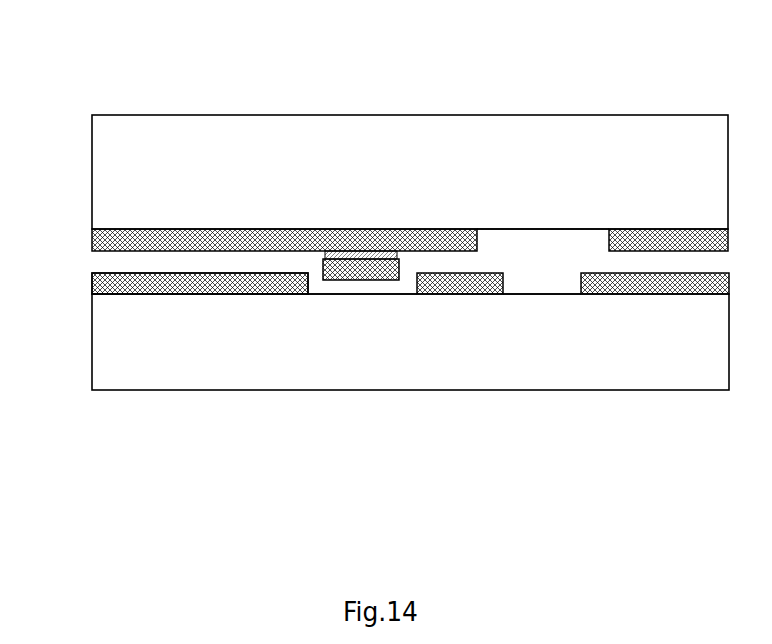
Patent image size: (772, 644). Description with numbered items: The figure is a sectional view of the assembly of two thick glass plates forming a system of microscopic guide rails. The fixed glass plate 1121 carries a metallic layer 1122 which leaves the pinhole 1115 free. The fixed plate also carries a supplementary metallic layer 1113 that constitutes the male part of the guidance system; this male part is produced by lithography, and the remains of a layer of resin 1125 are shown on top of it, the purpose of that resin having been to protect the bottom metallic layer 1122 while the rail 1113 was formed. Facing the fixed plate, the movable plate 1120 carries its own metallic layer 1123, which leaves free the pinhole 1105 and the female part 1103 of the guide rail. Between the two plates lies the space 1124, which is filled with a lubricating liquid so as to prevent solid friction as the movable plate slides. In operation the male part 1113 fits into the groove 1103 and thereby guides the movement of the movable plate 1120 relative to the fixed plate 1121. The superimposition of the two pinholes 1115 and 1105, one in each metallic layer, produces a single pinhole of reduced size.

The movable plate 1120 is at (220, 153).
The metallic layer 1122 is at (157, 228).
The pinhole 1115 is at (543, 228).
The layer of resin 1125 is at (368, 248).
The male part of the guidance system 1113 is at (341, 263).
The metallic layer 1123 is at (220, 292).
The space 1124 is at (168, 270).
The fixed glass plate 1121 is at (250, 362).
The female part of the guide rail 1103 is at (365, 295).
The pinhole 1105 is at (545, 291).